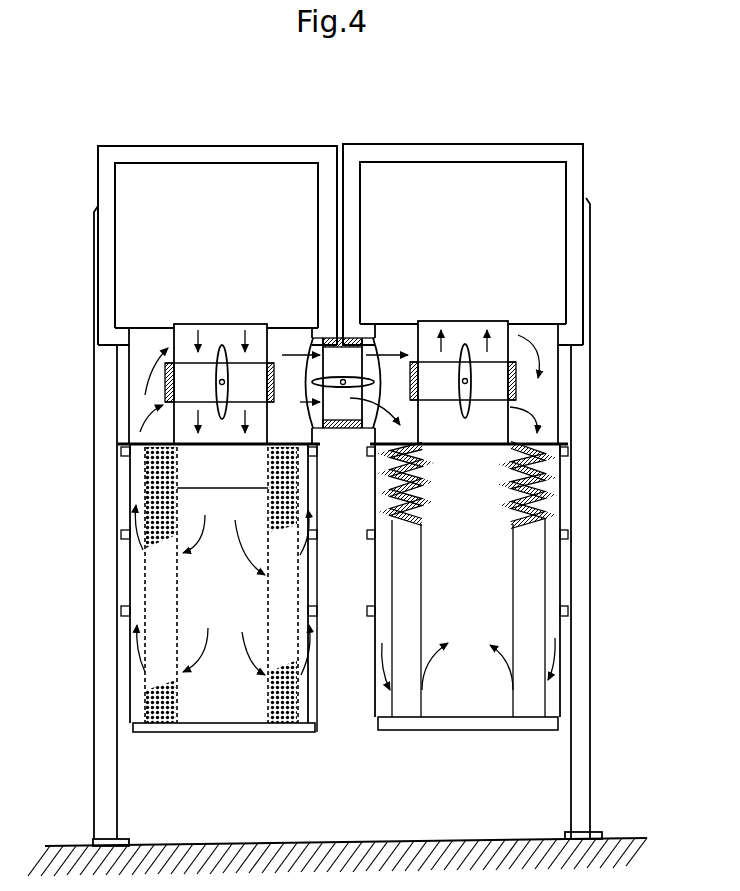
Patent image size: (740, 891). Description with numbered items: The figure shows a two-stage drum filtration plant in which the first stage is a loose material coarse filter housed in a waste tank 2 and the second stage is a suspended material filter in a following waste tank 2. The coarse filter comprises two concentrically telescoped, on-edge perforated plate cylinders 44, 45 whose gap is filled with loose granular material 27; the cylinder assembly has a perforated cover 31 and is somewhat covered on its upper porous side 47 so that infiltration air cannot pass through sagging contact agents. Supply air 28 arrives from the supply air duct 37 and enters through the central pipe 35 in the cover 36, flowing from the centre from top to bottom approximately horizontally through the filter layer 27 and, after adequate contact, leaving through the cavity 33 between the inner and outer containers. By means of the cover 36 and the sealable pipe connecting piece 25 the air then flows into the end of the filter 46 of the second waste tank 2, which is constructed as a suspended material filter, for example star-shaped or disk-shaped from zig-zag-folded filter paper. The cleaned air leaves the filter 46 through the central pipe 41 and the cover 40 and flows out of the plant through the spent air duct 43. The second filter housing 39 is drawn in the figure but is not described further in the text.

The waste tank 2 is at (128, 731).
The sealable pipe connecting piece 25 is at (342, 410).
The loose material 27 is at (280, 720).
The supply air 28 is at (185, 575).
The perforated cover 31 is at (284, 440).
The cavity 33 is at (132, 613).
The central pipe 35 is at (172, 343).
The cover 36 is at (127, 353).
The supply air duct 37 is at (177, 177).
The right filter housing 39 is at (498, 578).
The cover 40 is at (560, 367).
The central pipe 41 is at (492, 406).
The spent air duct 43 is at (555, 189).
The perforated plate cylinder 44 is at (153, 712).
The perforated plate cylinder 45 is at (178, 712).
The filter 46 is at (542, 484).
The upper porous side 47 is at (143, 474).